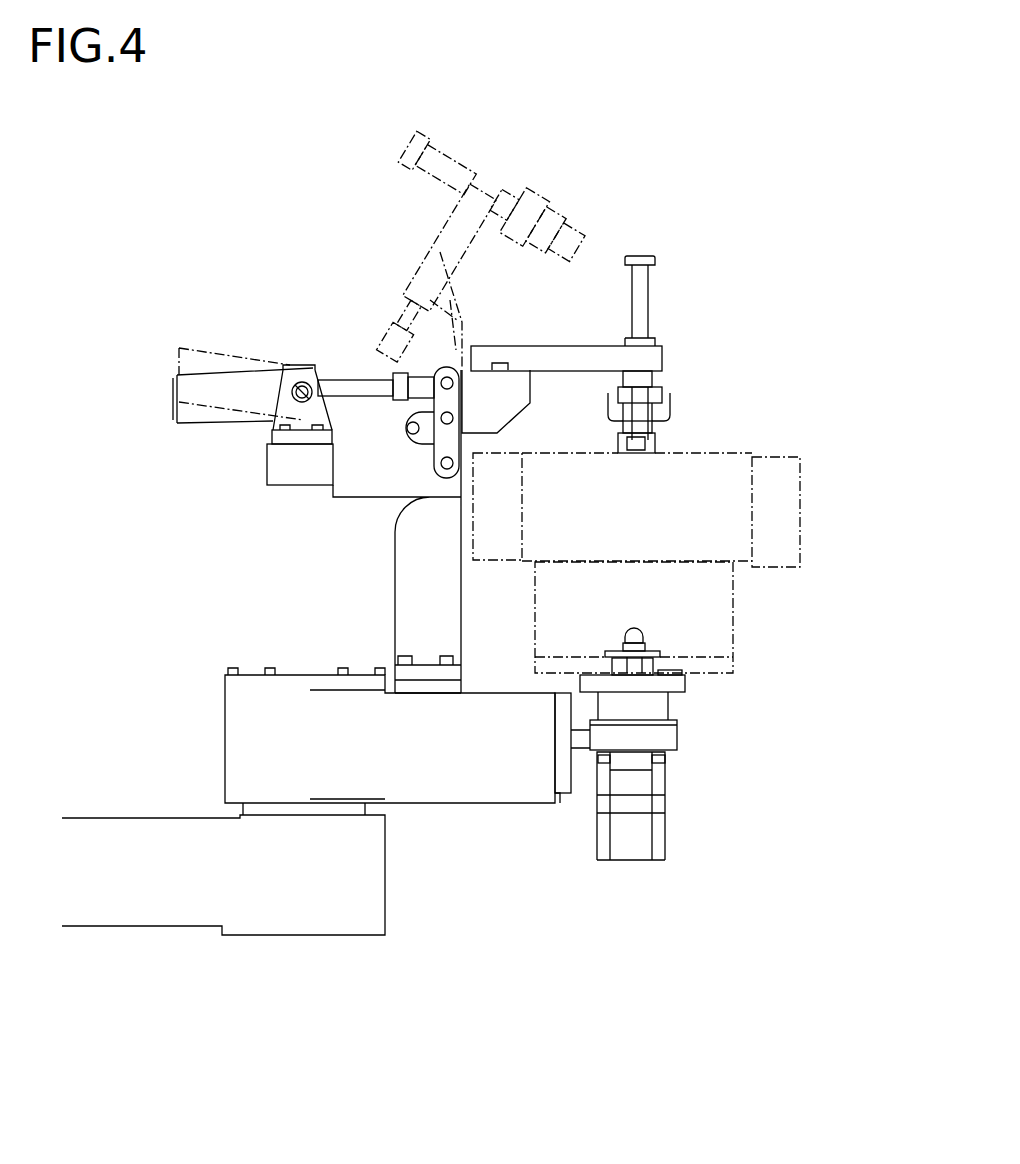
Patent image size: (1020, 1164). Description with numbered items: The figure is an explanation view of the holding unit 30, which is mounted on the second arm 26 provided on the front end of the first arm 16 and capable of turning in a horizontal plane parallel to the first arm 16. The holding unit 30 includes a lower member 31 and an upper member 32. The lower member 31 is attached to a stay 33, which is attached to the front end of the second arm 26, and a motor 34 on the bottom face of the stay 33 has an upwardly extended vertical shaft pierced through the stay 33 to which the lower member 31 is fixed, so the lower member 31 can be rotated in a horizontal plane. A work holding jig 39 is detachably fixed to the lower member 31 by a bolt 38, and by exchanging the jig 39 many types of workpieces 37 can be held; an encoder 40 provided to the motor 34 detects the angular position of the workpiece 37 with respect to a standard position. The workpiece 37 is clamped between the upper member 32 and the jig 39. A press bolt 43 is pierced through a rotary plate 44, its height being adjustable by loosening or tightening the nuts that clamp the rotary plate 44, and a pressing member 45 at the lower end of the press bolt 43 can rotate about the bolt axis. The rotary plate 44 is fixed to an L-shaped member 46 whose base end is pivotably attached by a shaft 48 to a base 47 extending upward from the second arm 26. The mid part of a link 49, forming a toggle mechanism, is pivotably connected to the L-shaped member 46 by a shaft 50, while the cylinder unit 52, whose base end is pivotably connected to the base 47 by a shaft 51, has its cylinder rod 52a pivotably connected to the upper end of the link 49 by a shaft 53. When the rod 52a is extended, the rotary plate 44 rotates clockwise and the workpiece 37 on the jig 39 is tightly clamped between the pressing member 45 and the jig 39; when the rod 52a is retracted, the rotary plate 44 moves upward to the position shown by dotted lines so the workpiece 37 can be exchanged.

The first arm 16 is at (150, 915).
The second arm 26 is at (235, 716).
The holding unit 30 is at (619, 303).
The lower member 31 is at (704, 767).
The upper member 32 is at (687, 376).
The stay 33 is at (668, 740).
The motor 34 is at (647, 783).
The workpiece 37 is at (783, 515).
The bolt 38 is at (648, 631).
The work holding jig 39 is at (718, 588).
The encoder 40 is at (640, 852).
The press bolt 43 is at (643, 301).
The rotary plate 44 is at (563, 355).
The pressing member 45 is at (660, 441).
The L-shaped member 46 is at (470, 383).
The base 47 is at (405, 553).
The shaft 48 is at (400, 431).
The link 49 is at (433, 453).
The shaft 50 is at (455, 418).
The shaft 51 is at (300, 390).
The cylinder unit 52 is at (188, 423).
The cylinder rod 52a is at (337, 375).
The shaft 53 is at (460, 380).